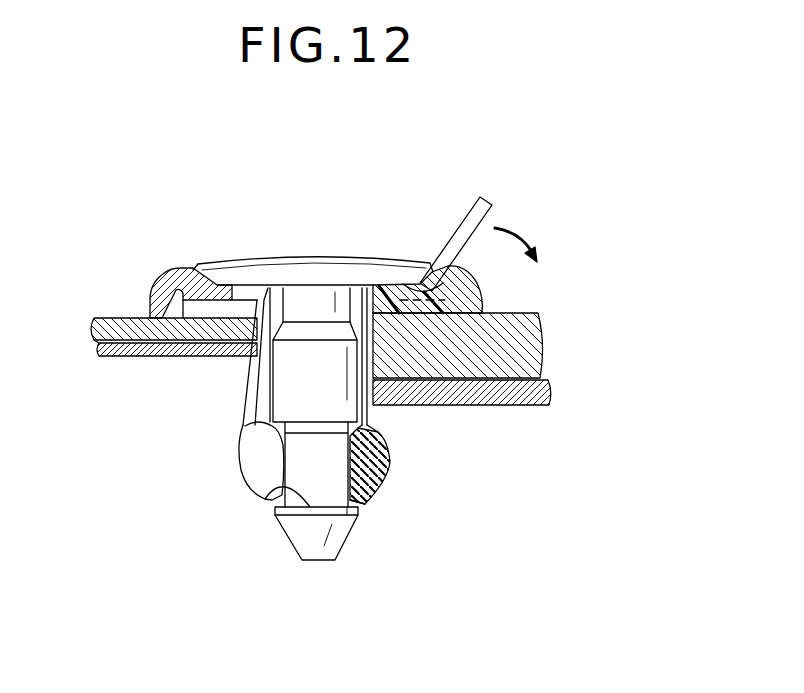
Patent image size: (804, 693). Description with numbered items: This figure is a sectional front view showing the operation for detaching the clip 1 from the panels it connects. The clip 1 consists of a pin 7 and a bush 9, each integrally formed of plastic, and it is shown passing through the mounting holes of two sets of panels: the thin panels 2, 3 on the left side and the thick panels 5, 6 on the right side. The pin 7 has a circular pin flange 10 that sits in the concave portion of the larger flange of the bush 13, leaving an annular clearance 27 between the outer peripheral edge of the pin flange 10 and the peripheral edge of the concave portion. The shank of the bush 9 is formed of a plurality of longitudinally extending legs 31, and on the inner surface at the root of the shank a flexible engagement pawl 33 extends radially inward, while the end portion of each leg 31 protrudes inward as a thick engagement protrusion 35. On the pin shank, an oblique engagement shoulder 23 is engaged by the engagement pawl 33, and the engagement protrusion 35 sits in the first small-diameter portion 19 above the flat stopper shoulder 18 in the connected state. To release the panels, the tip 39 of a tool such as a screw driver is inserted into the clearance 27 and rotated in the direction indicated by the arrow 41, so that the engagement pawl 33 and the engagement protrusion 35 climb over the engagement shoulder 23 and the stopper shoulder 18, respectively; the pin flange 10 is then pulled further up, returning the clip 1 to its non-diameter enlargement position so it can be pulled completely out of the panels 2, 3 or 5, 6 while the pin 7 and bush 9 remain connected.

The clip 1 is at (296, 318).
The thin panel 2 is at (118, 330).
The thin panel 3 is at (132, 348).
The thick panel 5 is at (520, 313).
The thick panel 6 is at (507, 395).
The pin 7 is at (324, 530).
The bush 9 is at (222, 427).
The pin flange 10 is at (262, 270).
The flange of the bush 13 is at (148, 297).
The stopper shoulder 18 is at (277, 490).
The first small-diameter portion 19 is at (368, 500).
The engagement shoulder 23 is at (377, 283).
The clearance 27 is at (193, 275).
The leg 31 is at (258, 368).
The engagement pawl 33 is at (280, 298).
The engagement protrusion 35 is at (256, 462).
The tip of the tool 39 is at (482, 196).
The arrow 41 is at (512, 226).